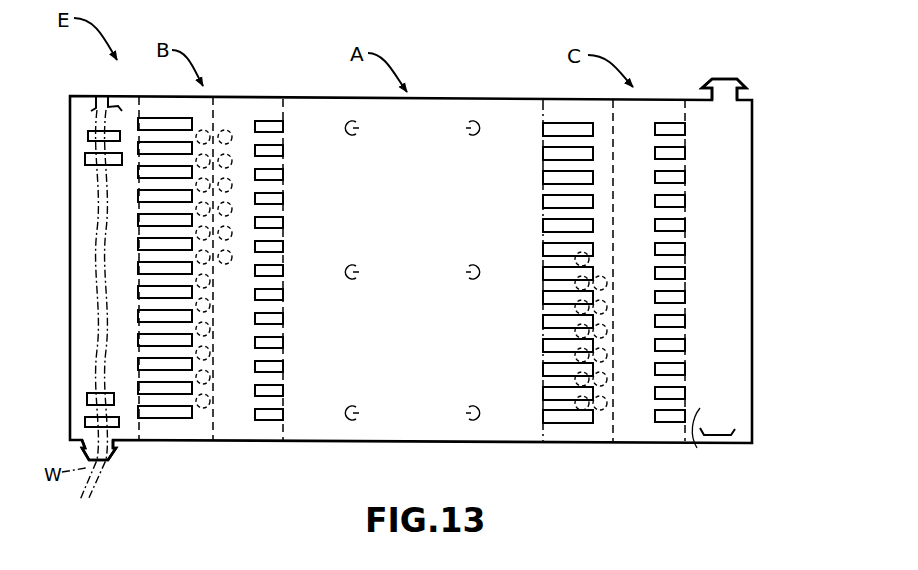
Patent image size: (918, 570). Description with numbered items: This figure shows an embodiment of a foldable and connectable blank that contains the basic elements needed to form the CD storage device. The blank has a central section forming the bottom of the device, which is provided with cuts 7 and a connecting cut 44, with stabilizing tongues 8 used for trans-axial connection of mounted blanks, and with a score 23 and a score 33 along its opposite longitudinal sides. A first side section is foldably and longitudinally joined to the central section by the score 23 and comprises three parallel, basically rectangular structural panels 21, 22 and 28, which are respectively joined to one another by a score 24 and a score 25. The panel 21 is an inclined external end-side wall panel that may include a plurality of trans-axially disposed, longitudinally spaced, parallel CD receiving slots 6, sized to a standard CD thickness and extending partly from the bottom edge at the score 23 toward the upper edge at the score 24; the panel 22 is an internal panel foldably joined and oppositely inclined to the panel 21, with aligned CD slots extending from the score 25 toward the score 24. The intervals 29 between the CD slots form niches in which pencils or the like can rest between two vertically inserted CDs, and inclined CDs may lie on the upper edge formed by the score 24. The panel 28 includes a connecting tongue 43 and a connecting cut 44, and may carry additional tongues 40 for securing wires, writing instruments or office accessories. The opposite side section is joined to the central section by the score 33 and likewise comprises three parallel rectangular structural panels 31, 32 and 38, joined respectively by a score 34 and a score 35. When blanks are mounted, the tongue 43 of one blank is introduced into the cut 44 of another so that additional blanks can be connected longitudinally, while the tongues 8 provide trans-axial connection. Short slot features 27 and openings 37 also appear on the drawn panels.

The CD receiving slots 6 is at (254, 319).
The cuts 7 is at (346, 279).
The stabilizing tongues 8 is at (350, 136).
The inclined external end-side wall structural panel 21 is at (451, 276).
The internal side structural panel 22 is at (178, 422).
The score 23 is at (283, 428).
The score 24 is at (215, 412).
The score 25 is at (160, 299).
The terminal slot 27 is at (265, 121).
The structural panel 28 is at (123, 384).
The intervals 29 is at (277, 188).
The structural panel 31 is at (560, 430).
The structural panel 32 is at (626, 430).
The score 33 is at (536, 412).
The score 34 is at (600, 441).
The score 35 is at (674, 434).
The wire openings 37 is at (589, 435).
The structural panel 38 is at (707, 446).
The additional tongues 40 is at (85, 424).
The connecting tongue 43 is at (723, 92).
The connecting cut 44 is at (95, 98).